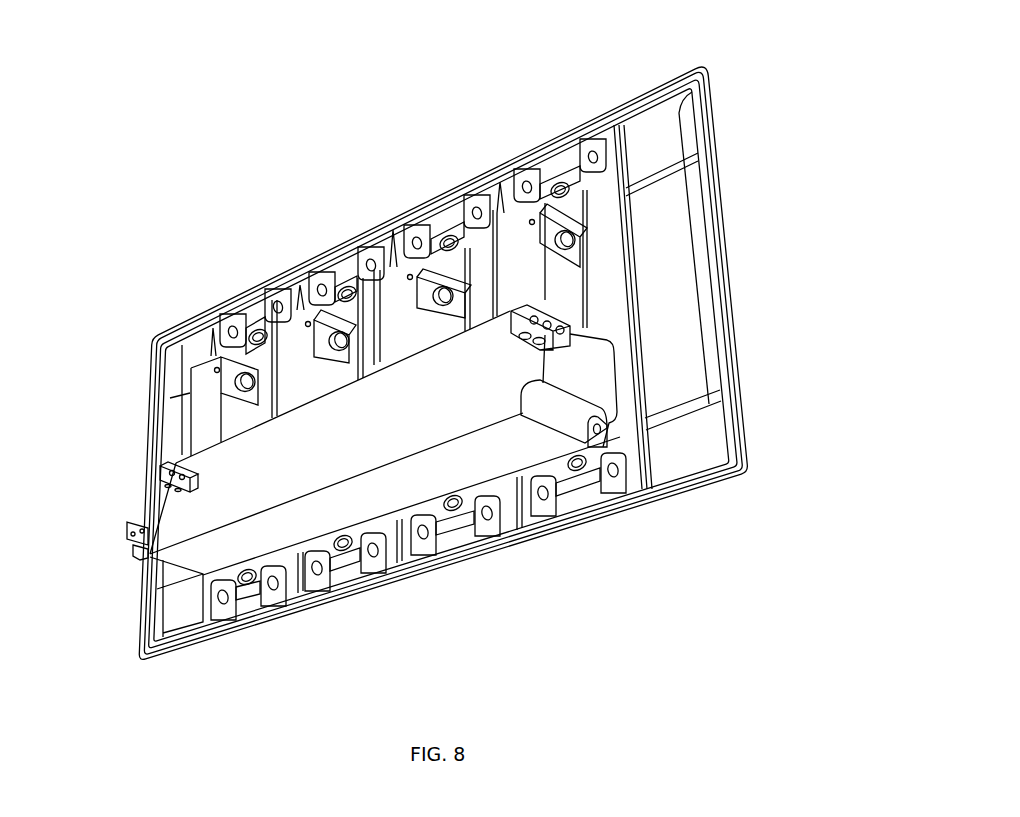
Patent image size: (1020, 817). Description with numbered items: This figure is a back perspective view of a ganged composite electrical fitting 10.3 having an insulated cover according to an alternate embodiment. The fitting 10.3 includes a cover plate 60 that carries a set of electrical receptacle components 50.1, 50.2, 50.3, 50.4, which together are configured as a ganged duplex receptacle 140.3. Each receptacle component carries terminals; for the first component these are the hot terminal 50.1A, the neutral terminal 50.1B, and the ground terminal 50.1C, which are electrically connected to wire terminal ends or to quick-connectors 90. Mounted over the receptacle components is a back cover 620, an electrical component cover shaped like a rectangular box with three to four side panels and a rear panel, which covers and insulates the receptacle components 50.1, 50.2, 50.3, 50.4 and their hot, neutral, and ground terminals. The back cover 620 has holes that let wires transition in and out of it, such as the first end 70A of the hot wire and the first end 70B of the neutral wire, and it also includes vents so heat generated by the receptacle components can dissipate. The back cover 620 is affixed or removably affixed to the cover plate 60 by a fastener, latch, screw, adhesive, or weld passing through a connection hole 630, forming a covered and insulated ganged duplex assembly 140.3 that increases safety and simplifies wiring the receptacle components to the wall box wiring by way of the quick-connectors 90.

The ganged duplex receptacle 140.3 is at (703, 623).
The ganged composite electrical fitting 10.3 is at (443, 363).
The cover plate 60 is at (678, 334).
The back cover 620 is at (373, 440).
The connection hole 630 is at (590, 428).
The first end of hot wire 70A is at (160, 484).
The first end of neutral wire 70B is at (510, 314).
The quick-connector 90 is at (133, 553).
The electrical receptacle component 50.1 is at (533, 291).
The electrical receptacle component 50.2 is at (417, 332).
The electrical receptacle component 50.3 is at (314, 383).
The electrical receptacle component 50.4 is at (221, 420).
The hot terminal 50.1A is at (580, 247).
The neutral terminal 50.1B is at (560, 170).
The ground terminal 50.1C is at (559, 190).